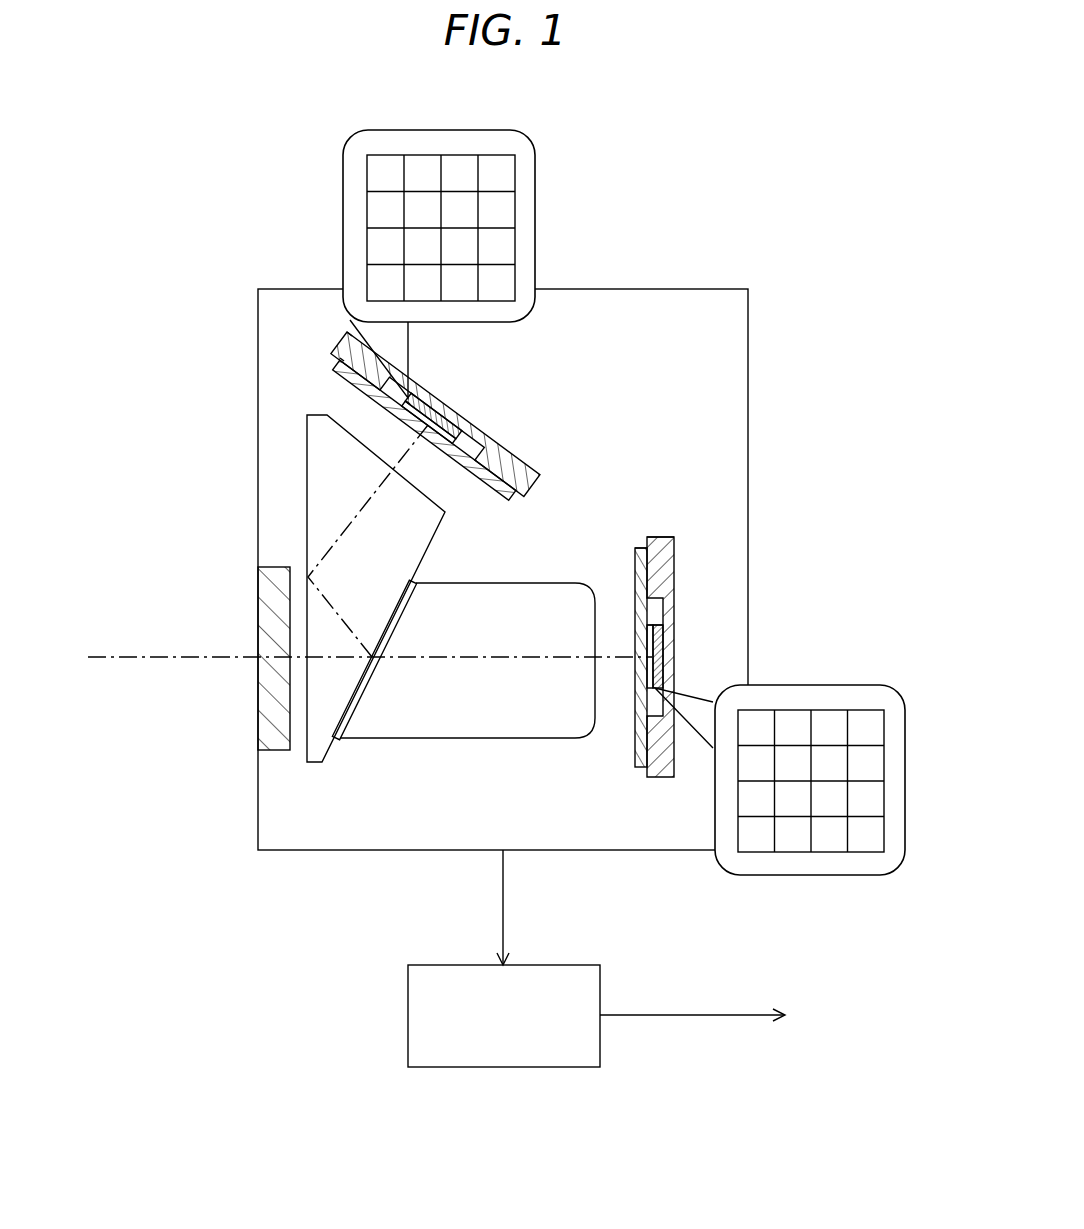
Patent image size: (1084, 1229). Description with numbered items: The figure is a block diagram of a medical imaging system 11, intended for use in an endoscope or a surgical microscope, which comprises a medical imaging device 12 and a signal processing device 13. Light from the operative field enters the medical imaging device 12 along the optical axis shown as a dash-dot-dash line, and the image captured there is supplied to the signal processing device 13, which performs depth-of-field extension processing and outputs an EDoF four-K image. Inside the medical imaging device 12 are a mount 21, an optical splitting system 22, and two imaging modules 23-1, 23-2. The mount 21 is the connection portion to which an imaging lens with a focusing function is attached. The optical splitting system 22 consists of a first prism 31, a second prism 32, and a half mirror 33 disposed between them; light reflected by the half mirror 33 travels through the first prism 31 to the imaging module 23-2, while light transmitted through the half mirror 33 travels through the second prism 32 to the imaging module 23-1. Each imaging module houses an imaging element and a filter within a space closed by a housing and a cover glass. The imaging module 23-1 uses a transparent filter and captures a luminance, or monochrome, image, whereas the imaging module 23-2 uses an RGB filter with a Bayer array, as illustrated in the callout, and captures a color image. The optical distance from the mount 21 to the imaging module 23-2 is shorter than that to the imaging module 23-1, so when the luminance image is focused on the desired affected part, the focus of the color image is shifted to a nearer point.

The medical imaging system 11 is at (796, 214).
The medical imaging device 12 is at (258, 370).
The signal processing device 13 is at (503, 1068).
The mount 21 is at (270, 617).
The optical splitting system 22 is at (482, 765).
The imaging module 23-1 is at (676, 490).
The imaging module 23-2 is at (466, 392).
The first prism 31 is at (307, 433).
The second prism 32 is at (420, 739).
The half mirror 33 is at (342, 710).